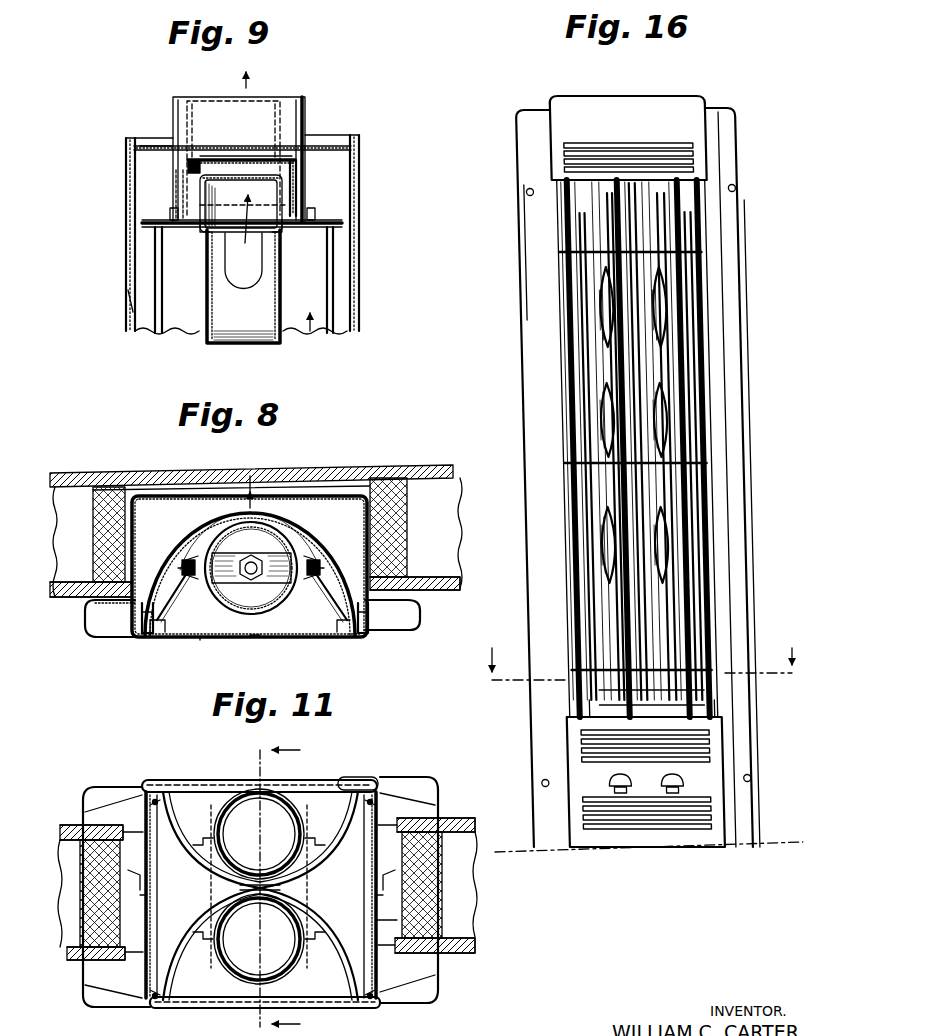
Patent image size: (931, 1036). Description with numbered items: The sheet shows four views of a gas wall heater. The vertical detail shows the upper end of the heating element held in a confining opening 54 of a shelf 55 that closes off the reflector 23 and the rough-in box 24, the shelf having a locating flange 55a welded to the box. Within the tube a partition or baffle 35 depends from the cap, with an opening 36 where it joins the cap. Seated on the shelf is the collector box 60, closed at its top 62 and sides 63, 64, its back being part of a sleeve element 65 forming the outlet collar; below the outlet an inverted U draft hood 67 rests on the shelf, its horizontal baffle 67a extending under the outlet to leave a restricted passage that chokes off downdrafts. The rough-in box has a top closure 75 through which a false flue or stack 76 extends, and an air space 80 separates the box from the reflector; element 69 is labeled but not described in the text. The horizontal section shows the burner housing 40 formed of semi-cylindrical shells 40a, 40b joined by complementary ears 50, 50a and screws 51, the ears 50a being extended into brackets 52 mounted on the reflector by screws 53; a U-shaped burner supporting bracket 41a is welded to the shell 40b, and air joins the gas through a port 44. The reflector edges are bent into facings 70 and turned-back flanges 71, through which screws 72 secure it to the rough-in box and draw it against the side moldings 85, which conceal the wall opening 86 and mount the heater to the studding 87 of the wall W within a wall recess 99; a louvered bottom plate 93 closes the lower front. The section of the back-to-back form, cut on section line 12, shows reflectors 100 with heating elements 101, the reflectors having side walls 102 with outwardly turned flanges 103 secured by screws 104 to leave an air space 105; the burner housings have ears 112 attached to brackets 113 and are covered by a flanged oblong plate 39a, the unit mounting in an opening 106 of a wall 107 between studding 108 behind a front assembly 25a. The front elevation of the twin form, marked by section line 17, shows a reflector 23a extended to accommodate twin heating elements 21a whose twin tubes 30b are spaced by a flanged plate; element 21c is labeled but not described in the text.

In FIG. 9, the reflector 23 is at (303, 336).
In FIG. 8, the reflector 23 is at (248, 479).
In FIG. 9, the rough-in box 24 is at (359, 265).
In FIG. 8, the rough-in box 24 is at (275, 496).
In FIG. 9, the partition or baffle 35 is at (207, 309).
In FIG. 9, the opening 36 is at (258, 271).
In FIG. 9, the confining opening 54 is at (286, 227).
In FIG. 9, the shelf 55 is at (175, 229).
In FIG. 9, the flange 55a is at (170, 215).
In FIG. 9, the collector box 60 is at (256, 158).
In FIG. 9, the top 62 is at (230, 158).
In FIG. 9, the side 63 is at (188, 166).
In FIG. 9, the side 64 is at (305, 166).
In FIG. 9, the sleeve element 65 is at (277, 100).
In FIG. 9, the draft hood 67 is at (284, 190).
In FIG. 9, the baffle 67a is at (230, 188).
In FIG. 9, the rod 69 is at (190, 184).
In FIG. 9, the top closure 75 is at (150, 146).
In FIG. 9, the false flue or stack 76 is at (303, 111).
In FIG. 9, the air space 80 is at (128, 300).
In FIG. 8, the burner housing 40 is at (245, 629).
In FIG. 8, the semi-cylindrical shell 40a is at (265, 633).
In FIG. 8, the semi-cylindrical shell 40b is at (290, 538).
In FIG. 8, the burner supporting bracket 41a is at (237, 583).
In FIG. 8, the port 44 is at (254, 558).
In FIG. 8, the ear 50 is at (180, 568).
In FIG. 8, the ear 50a is at (186, 563).
In FIG. 8, the screw 51 is at (185, 576).
In FIG. 8, the bracket 52 is at (173, 613).
In FIG. 8, the screw 53 is at (165, 627).
In FIG. 8, the facing 70 is at (152, 637).
In FIG. 8, the flange 71 is at (146, 605).
In FIG. 8, the screw 72 is at (140, 613).
In FIG. 8, the side molding 85 is at (92, 637).
In FIG. 8, the wall opening 86 is at (165, 482).
In FIG. 8, the studding 87 is at (93, 531).
In FIG. 8, the louvered bottom plate 93 is at (200, 638).
In FIG. 8, the wall recess 99 is at (318, 478).
In FIG. 8, the wall W is at (78, 598).
In FIG. 11, the section line 12- 12 is at (297, 886).
In FIG. 11, the front assembly 25a is at (222, 777).
In FIG. 11, the flanged oblong plate 39a is at (300, 878).
In FIG. 11, the reflector 100 is at (333, 858).
In FIG. 11, the heating element 101 is at (225, 812).
In FIG. 11, the side wall 102 is at (337, 845).
In FIG. 11, the outwardly turned flange 103 is at (140, 886).
In FIG. 11, the screw 104 is at (143, 898).
In FIG. 11, the air space 105 is at (155, 787).
In FIG. 11, the opening 106 is at (402, 929).
In FIG. 11, the wall 107 is at (477, 941).
In FIG. 11, the studding 108 is at (432, 888).
In FIG. 11, the ear 112 is at (199, 840).
In FIG. 11, the bracket 113 is at (158, 798).
In FIG. 16, the section line 17- 17 is at (644, 651).
In FIG. 16, the twin heating elements 21a is at (678, 272).
In FIG. 16, the frame strip 21c is at (588, 203).
In FIG. 16, the reflector 23a is at (687, 206).
In FIG. 16, the twin tubes 30b is at (597, 385).